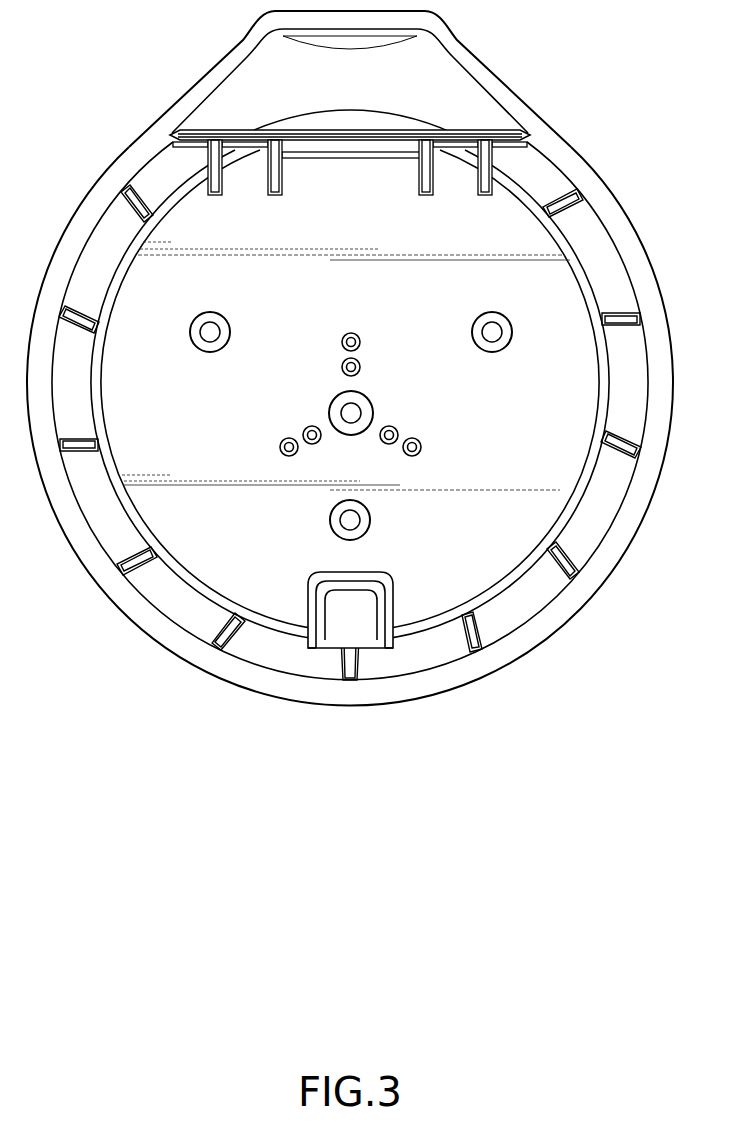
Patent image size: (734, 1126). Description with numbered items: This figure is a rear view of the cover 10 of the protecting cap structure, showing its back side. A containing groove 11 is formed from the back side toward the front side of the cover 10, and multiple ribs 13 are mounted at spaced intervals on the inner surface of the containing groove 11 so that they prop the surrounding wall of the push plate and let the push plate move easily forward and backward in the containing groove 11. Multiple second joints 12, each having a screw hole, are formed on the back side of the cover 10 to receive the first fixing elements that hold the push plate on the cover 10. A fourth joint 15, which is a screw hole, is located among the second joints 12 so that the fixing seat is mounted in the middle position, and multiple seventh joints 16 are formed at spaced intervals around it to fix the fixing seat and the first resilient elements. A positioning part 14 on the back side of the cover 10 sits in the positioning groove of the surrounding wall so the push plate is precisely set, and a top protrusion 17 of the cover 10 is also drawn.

The housing body 10 is at (218, 78).
The bottom plate 11 is at (516, 441).
The mounting boss 12 is at (500, 340).
The positioning rib 13 is at (556, 195).
The U-shaped retaining clip 14 is at (383, 590).
The central boss 15 is at (345, 400).
The small hole 16 is at (345, 337).
The top protrusion 17 is at (418, 70).